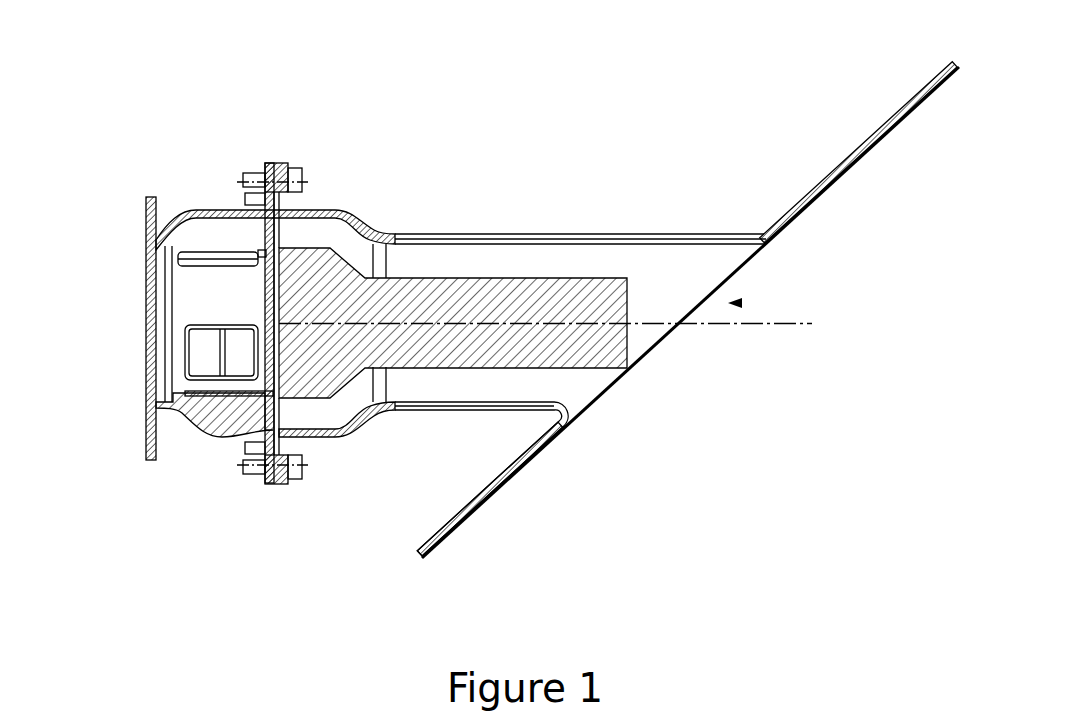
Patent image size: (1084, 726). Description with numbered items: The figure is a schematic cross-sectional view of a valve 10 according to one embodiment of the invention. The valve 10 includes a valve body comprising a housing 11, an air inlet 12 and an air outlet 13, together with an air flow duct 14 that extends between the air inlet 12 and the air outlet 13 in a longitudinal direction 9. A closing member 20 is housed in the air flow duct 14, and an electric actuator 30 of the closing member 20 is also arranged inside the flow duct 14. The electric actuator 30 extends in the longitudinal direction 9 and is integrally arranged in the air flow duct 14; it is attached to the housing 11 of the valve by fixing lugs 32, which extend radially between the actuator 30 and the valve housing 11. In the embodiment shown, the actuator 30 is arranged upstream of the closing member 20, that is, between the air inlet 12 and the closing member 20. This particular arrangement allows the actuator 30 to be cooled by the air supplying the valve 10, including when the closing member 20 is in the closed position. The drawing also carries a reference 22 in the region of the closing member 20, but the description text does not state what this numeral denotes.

The longitudinal direction 9 is at (803, 322).
The valve 10 is at (247, 110).
The housing 11 is at (347, 212).
The air inlet 12 is at (732, 303).
The air outlet 13 is at (143, 298).
The air flow duct 14 is at (442, 262).
The closing member 20 is at (210, 293).
The internal module 22 is at (203, 350).
The electric actuator 30 is at (483, 353).
The fixing lugs 32 is at (277, 415).